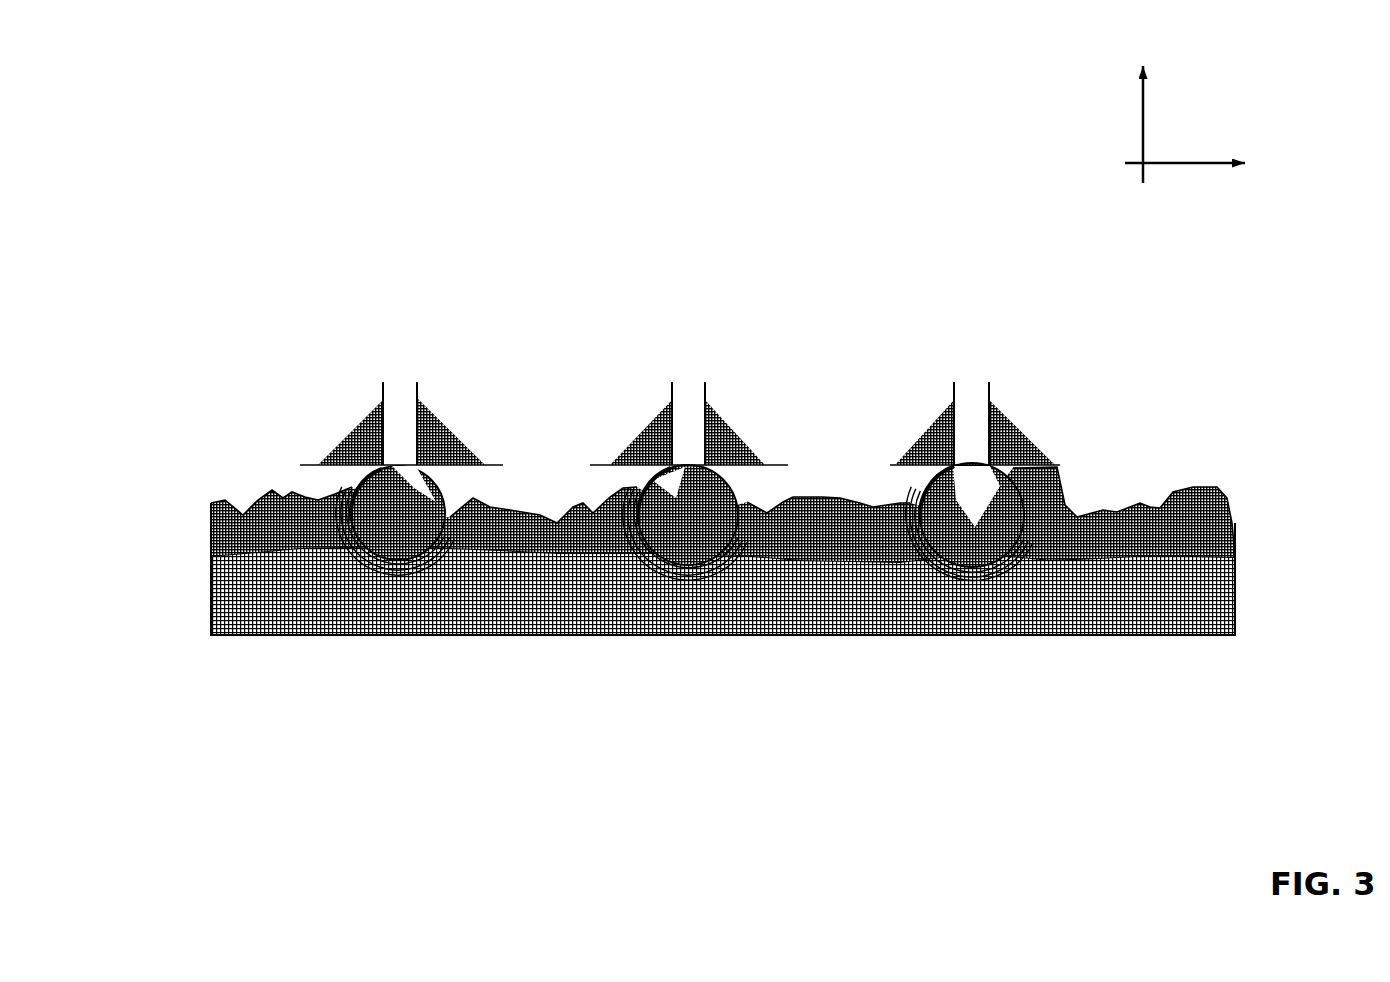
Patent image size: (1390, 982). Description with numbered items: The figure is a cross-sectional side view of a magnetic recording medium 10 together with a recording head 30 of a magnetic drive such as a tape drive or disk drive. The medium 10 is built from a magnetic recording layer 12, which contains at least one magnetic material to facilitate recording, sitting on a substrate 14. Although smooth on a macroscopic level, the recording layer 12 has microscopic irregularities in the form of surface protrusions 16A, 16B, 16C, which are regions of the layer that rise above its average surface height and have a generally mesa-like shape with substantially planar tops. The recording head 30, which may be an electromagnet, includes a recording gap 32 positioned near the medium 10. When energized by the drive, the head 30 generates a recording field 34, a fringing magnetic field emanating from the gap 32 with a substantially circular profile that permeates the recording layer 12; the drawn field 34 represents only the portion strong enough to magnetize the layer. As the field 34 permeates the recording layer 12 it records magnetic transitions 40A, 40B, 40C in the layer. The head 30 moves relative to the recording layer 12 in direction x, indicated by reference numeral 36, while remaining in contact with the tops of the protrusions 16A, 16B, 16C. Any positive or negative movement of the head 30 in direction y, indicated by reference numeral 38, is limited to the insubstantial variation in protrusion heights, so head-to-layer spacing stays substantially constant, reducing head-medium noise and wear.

The magnetic recording medium 10 is at (178, 557).
The magnetic recording layer 12 is at (1237, 520).
The substrate 14 is at (1240, 593).
The surface protrusion 16A is at (342, 517).
The surface protrusion 16B is at (737, 477).
The surface protrusion 16C is at (1060, 478).
The recording head 30 is at (445, 432).
The recording gap 32 is at (397, 385).
The recording field 34 is at (458, 525).
The direction x 36 is at (1200, 165).
The direction y 38 is at (1143, 125).
The magnetic transition 40A is at (342, 483).
The magnetic transition 40B is at (633, 525).
The magnetic transition 40C is at (913, 525).